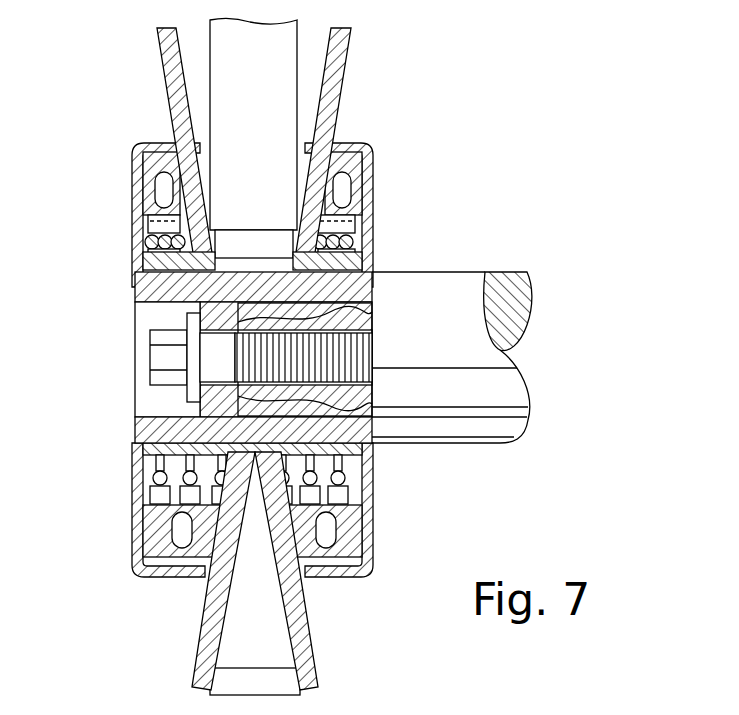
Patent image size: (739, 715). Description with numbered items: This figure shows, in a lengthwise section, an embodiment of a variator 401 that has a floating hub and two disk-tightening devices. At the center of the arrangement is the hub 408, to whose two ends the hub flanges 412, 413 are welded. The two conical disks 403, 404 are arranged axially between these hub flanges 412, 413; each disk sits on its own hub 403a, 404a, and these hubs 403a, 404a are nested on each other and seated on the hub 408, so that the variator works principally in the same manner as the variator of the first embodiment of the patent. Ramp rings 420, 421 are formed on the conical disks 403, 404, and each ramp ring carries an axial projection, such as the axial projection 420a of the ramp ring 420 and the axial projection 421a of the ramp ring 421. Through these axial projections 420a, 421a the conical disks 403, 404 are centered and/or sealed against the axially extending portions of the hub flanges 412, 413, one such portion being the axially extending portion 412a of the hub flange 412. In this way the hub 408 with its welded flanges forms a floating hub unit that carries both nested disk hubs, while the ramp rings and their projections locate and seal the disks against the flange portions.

The variator 401 is at (480, 90).
The conical disk 403 is at (163, 90).
The conical disk 404 is at (337, 95).
The hub 403a is at (148, 262).
The hub 404a is at (372, 250).
The hub 408 is at (375, 275).
The hub flange 412 is at (138, 198).
The hub flange 413 is at (375, 188).
The axially extending portion 412a is at (133, 565).
The ramp ring 420 is at (200, 575).
The axial projection 420a is at (183, 563).
The ramp ring 421 is at (314, 567).
The axial projection 421a is at (322, 565).